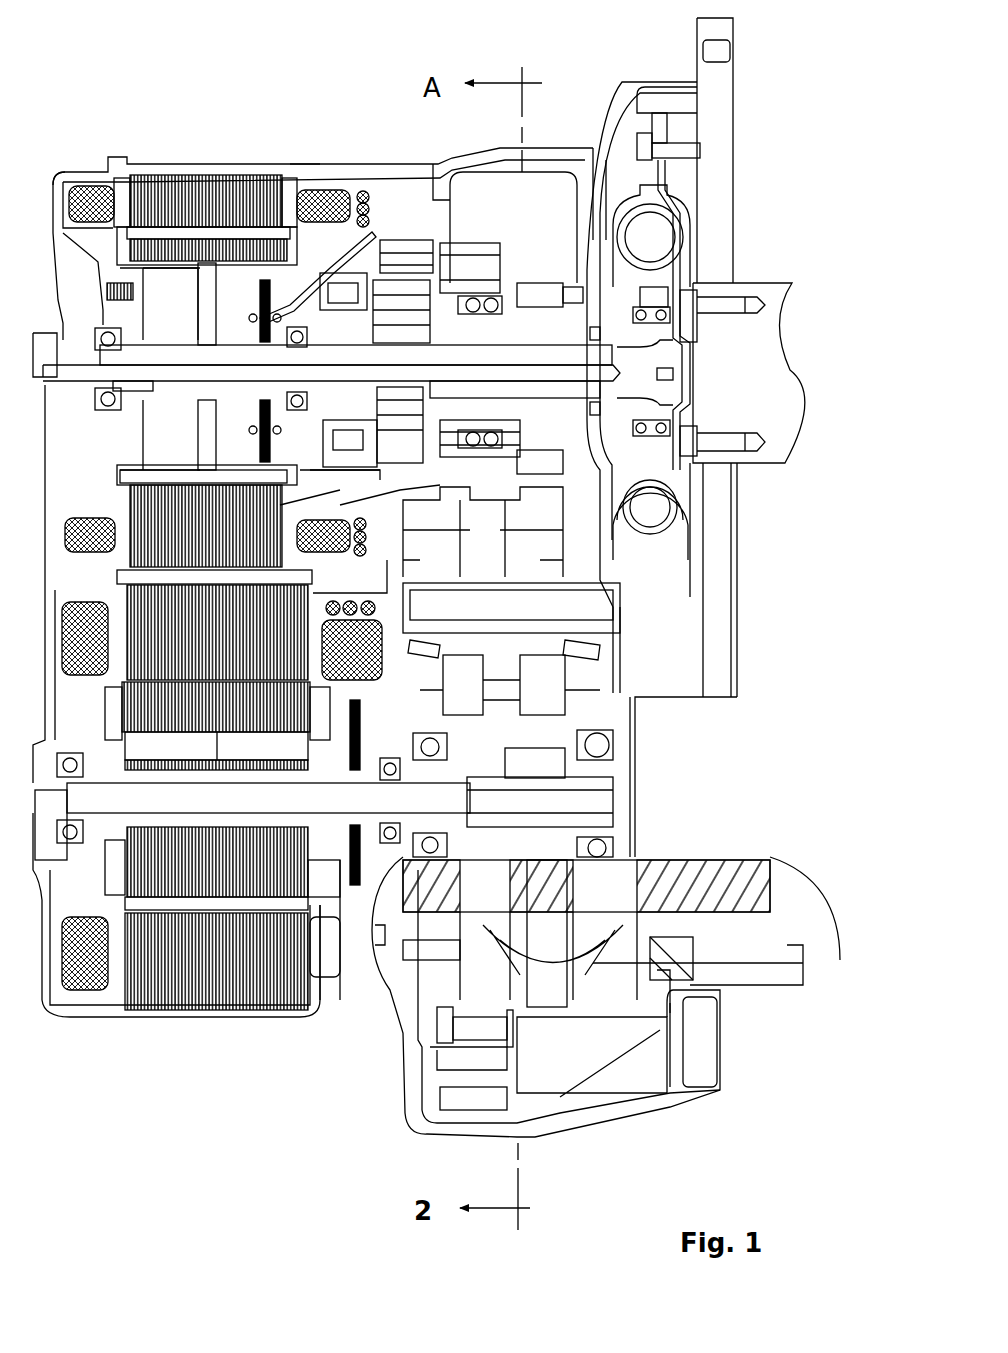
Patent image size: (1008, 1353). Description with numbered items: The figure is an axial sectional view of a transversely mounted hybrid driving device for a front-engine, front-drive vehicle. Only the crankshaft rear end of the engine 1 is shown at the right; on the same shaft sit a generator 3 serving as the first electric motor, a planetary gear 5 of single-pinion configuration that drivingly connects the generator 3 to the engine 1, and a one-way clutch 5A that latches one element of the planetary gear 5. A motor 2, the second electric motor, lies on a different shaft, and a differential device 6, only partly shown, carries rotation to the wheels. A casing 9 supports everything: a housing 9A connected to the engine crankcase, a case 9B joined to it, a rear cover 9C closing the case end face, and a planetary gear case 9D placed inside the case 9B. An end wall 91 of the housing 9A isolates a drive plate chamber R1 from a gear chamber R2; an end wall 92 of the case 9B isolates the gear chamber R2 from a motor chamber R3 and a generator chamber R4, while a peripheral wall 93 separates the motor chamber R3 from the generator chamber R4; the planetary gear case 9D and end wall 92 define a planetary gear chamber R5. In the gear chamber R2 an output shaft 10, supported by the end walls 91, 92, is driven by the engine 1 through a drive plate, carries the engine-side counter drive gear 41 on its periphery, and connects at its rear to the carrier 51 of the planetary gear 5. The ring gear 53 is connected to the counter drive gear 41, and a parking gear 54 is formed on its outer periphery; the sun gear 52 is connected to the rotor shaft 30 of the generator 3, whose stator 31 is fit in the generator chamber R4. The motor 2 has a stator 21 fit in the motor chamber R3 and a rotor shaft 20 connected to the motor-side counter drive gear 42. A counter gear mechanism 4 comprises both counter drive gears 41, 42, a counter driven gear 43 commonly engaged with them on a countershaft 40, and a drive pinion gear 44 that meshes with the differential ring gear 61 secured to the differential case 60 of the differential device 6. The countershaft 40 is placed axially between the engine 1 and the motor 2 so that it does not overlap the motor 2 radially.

The engine 1 is at (768, 280).
The motor 2 is at (252, 845).
The generator 3 is at (217, 331).
The counter gear mechanism 4 is at (625, 612).
The planetary gear 5 is at (421, 345).
The one-way clutch 5A is at (337, 192).
The differential device 6 is at (587, 997).
The casing 9 is at (383, 164).
The housing 9A is at (625, 82).
The case 9B is at (302, 164).
The rear cover 9C is at (80, 171).
The planetary gear case 9D is at (435, 164).
The output shaft 10 is at (675, 380).
The rotor shaft 20 is at (148, 780).
The stator 21 is at (120, 1018).
The rotor shaft 30 is at (164, 393).
The stator 31 is at (166, 175).
The countershaft 40 is at (456, 585).
The counter drive gear 41 is at (525, 293).
The counter drive gear 42 is at (540, 845).
The counter driven gear 43 is at (537, 748).
The drive pinion gear 44 is at (487, 533).
The carrier 51 is at (400, 425).
The sun gear 52 is at (375, 336).
The ring gear 53 is at (382, 492).
The parking gear 54 is at (375, 255).
The differential case 60 is at (612, 965).
The differential ring gear 61 is at (488, 707).
The end wall 91 is at (600, 525).
The end wall 92 is at (493, 262).
The peripheral wall 93 is at (128, 583).
The drive plate chamber R1 is at (737, 156).
The gear chamber R2 is at (556, 212).
The motor chamber R3 is at (349, 936).
The generator chamber R4 is at (195, 304).
The planetary gear chamber R5 is at (483, 564).